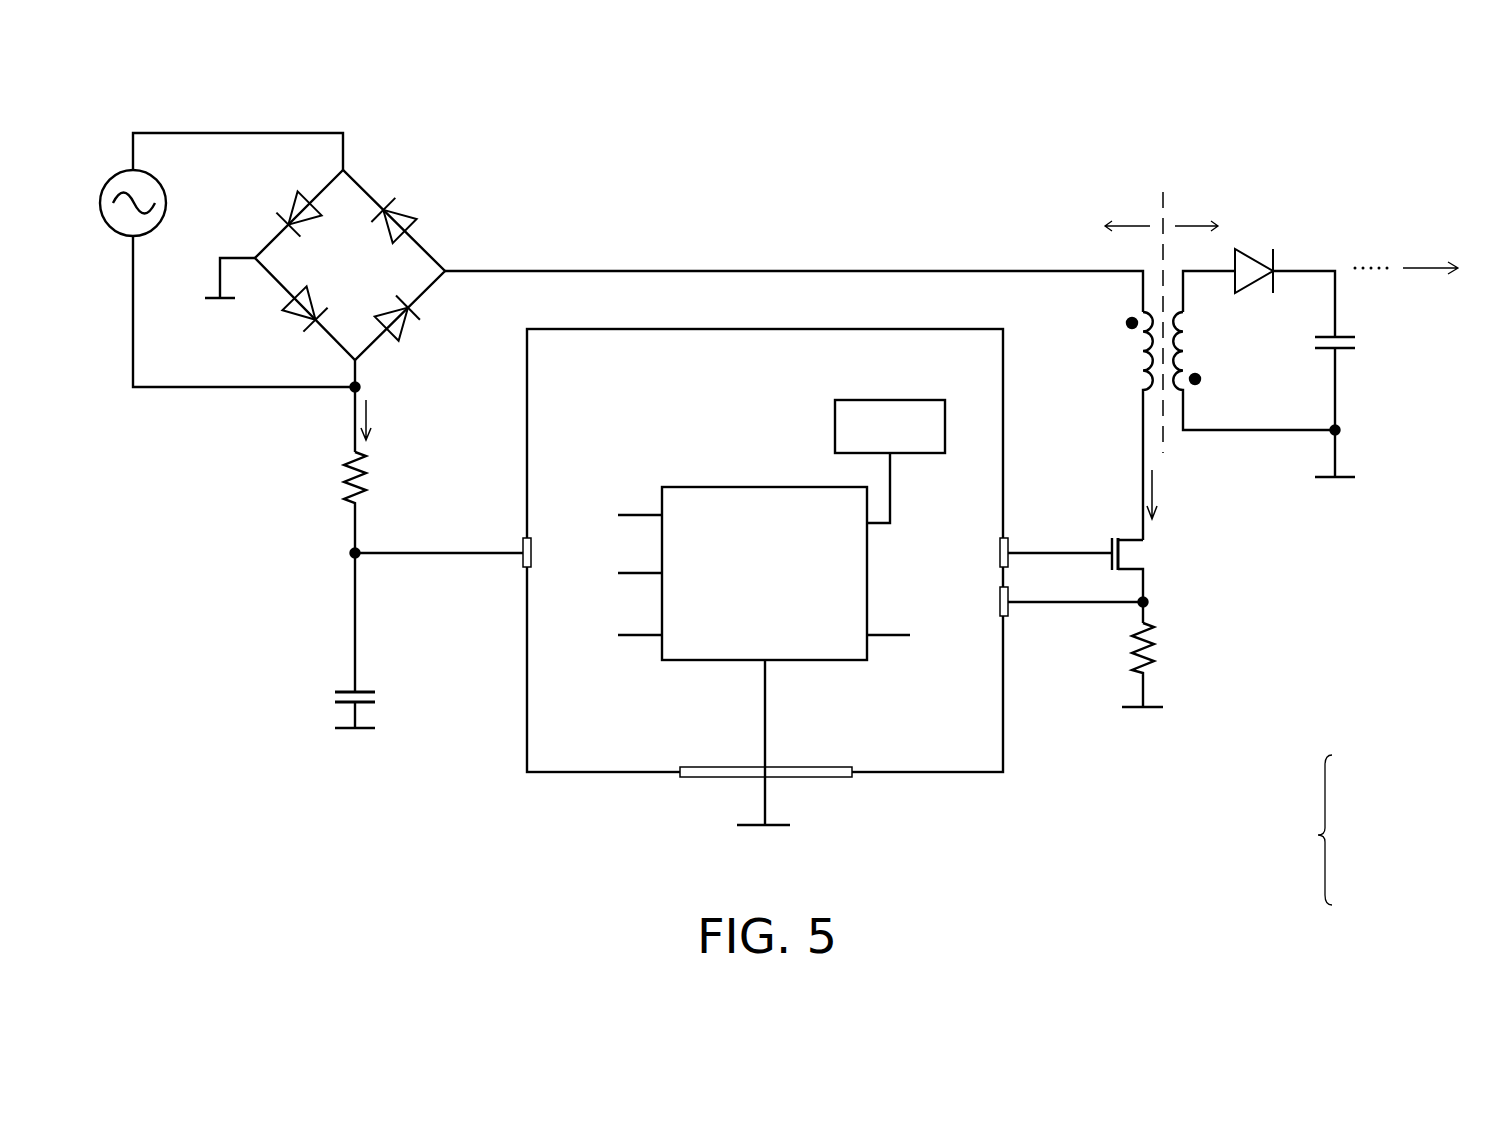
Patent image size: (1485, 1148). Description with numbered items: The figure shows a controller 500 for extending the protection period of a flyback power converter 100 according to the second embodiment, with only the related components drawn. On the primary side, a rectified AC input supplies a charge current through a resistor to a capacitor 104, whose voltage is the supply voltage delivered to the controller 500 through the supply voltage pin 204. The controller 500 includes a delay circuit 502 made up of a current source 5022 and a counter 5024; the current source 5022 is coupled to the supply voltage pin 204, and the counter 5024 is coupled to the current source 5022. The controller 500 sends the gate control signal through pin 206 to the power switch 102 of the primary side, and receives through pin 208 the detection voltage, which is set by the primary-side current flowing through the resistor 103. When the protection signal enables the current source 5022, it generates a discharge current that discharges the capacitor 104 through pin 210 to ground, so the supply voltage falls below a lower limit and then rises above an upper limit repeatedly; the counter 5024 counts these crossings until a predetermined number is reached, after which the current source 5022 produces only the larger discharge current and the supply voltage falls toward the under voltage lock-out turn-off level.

The power converter 100 is at (1292, 104).
The power switch 102 is at (1153, 553).
The resistor 103 is at (1153, 640).
The capacitor 104 is at (333, 692).
The supply voltage pin 204 is at (522, 540).
The pin 206 is at (1010, 540).
The pin 208 is at (1009, 606).
The pin 210 is at (817, 777).
The controller 500 is at (890, 329).
The delay circuit 502 is at (1318, 835).
The current source 5022 is at (690, 487).
The counter 5024 is at (920, 400).